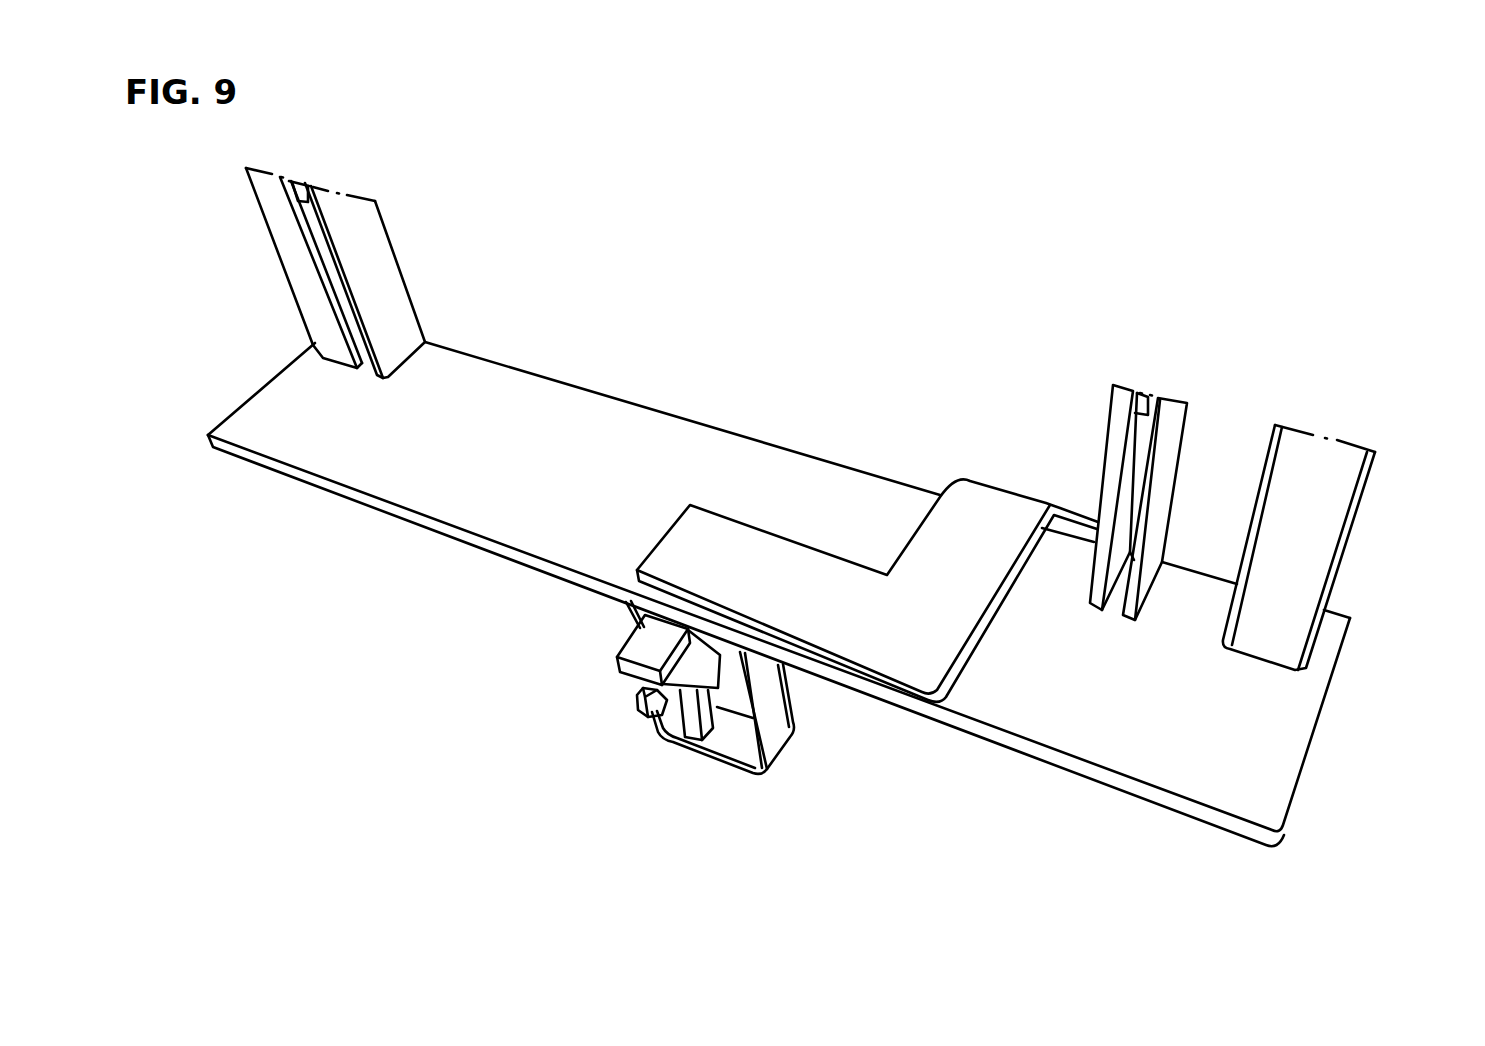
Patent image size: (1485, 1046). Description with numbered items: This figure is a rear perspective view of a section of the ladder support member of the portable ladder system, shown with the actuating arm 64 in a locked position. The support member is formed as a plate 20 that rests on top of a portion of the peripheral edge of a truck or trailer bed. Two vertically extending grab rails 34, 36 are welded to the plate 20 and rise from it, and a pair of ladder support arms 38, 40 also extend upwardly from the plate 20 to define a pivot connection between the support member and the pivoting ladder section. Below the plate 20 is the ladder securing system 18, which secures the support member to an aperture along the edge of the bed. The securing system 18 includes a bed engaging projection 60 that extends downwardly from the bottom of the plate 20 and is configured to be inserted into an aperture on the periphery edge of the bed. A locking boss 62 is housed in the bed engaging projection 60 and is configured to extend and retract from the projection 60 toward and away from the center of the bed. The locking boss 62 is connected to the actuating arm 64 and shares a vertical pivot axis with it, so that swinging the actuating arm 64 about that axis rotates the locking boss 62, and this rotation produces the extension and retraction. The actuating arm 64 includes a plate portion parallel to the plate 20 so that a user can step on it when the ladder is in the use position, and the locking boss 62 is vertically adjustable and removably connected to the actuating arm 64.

The ladder securing system 18 is at (670, 711).
The plate 20 is at (570, 482).
The grab rail 34 is at (298, 262).
The grab rail 36 is at (1332, 517).
The ladder support arm 38 is at (376, 262).
The ladder support arm 40 is at (1106, 445).
The bed engaging projection 60 is at (784, 751).
The locking boss 62 is at (615, 663).
The actuating arm 64 is at (915, 638).